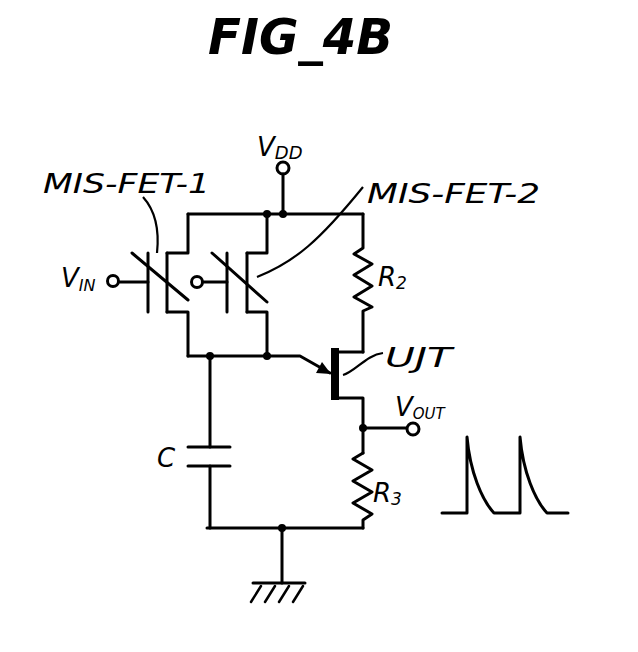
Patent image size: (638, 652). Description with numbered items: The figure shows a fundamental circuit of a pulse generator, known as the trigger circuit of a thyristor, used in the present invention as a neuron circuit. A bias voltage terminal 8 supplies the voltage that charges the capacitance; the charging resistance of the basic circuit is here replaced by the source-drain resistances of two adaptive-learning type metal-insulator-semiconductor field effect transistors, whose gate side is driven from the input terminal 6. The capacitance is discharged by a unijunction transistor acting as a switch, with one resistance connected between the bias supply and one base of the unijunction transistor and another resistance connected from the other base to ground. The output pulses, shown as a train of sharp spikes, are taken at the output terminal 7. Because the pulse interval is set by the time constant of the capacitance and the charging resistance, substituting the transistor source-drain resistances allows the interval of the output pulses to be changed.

The input terminal 6 is at (112, 287).
The output terminal 7 is at (419, 430).
The bias voltage terminal 8 is at (289, 166).